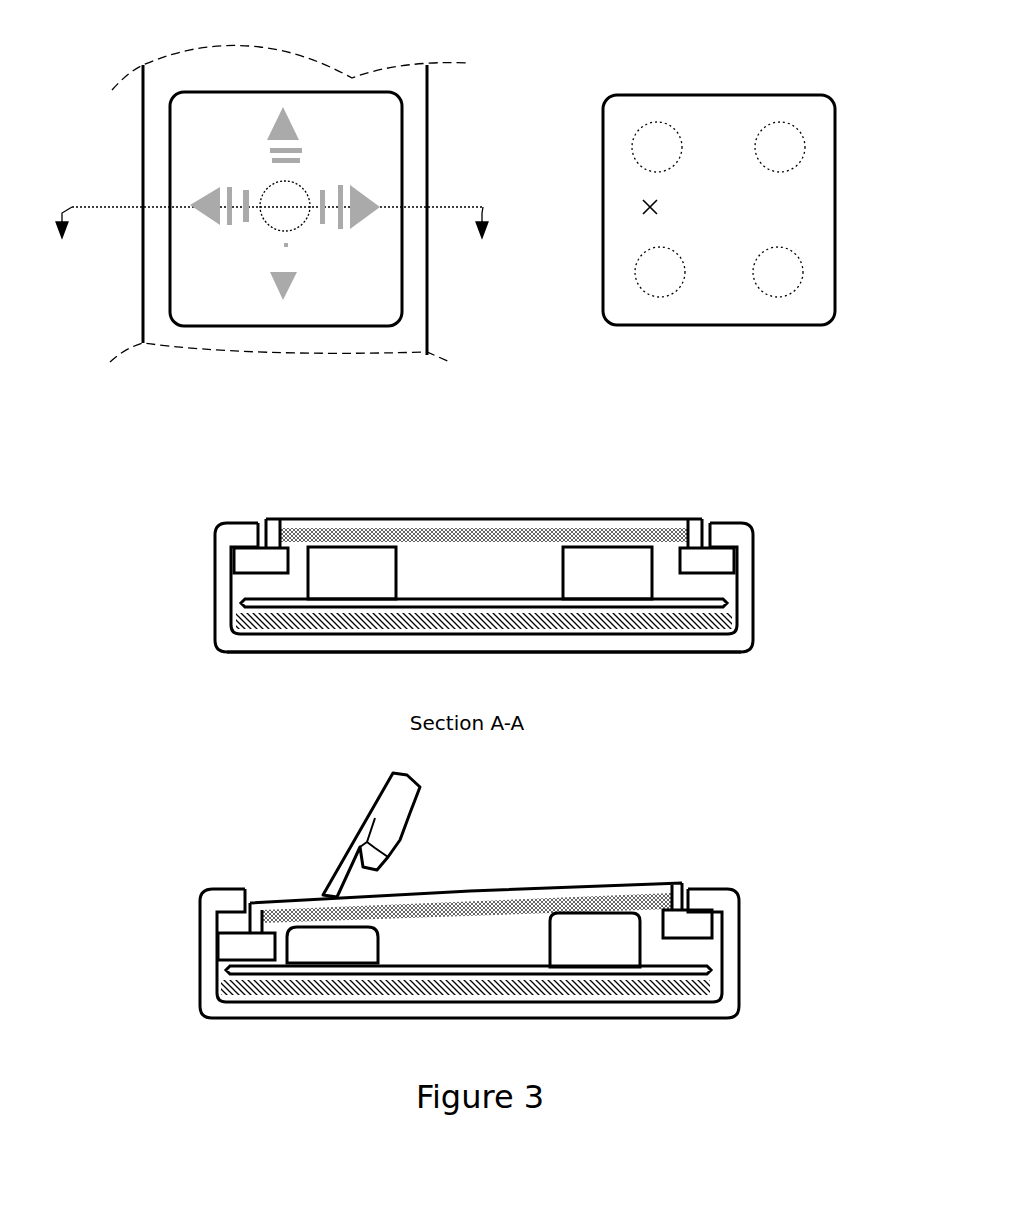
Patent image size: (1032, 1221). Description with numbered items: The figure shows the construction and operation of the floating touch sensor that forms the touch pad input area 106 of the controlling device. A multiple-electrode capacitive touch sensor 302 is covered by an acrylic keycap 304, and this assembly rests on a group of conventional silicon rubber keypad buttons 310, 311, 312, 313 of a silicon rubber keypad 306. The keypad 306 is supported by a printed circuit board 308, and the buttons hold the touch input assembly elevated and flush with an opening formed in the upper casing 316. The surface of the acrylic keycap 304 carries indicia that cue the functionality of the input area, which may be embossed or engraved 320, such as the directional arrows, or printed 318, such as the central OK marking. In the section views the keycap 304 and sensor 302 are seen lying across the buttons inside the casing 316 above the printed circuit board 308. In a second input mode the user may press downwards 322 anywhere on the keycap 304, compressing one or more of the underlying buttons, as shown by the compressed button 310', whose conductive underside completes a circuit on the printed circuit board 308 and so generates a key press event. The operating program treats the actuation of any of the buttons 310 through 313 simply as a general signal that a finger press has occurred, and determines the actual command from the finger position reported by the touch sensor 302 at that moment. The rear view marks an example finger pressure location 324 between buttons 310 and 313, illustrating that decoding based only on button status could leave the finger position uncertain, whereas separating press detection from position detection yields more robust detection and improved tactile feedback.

The touch pad input area 106 is at (240, 298).
The multiple-electrode capacitive touch sensor 302 is at (645, 530).
The acrylic keycap 304 is at (330, 318).
The silicon rubber keypad 306 is at (810, 223).
The printed circuit board 308 is at (247, 645).
The silicon rubber keypad button 310 is at (484, 475).
The compressed button 310' is at (309, 1009).
The silicon rubber keypad button 311 is at (785, 290).
The silicon rubber keypad button 312 is at (780, 135).
The silicon rubber keypad button 313 is at (648, 130).
The upper casing 316 is at (763, 507).
The printed indicia 318 is at (293, 187).
The embossed or engraved indicia 320 is at (280, 127).
The downward press 322 is at (320, 863).
The finger pressure location 324 is at (640, 215).